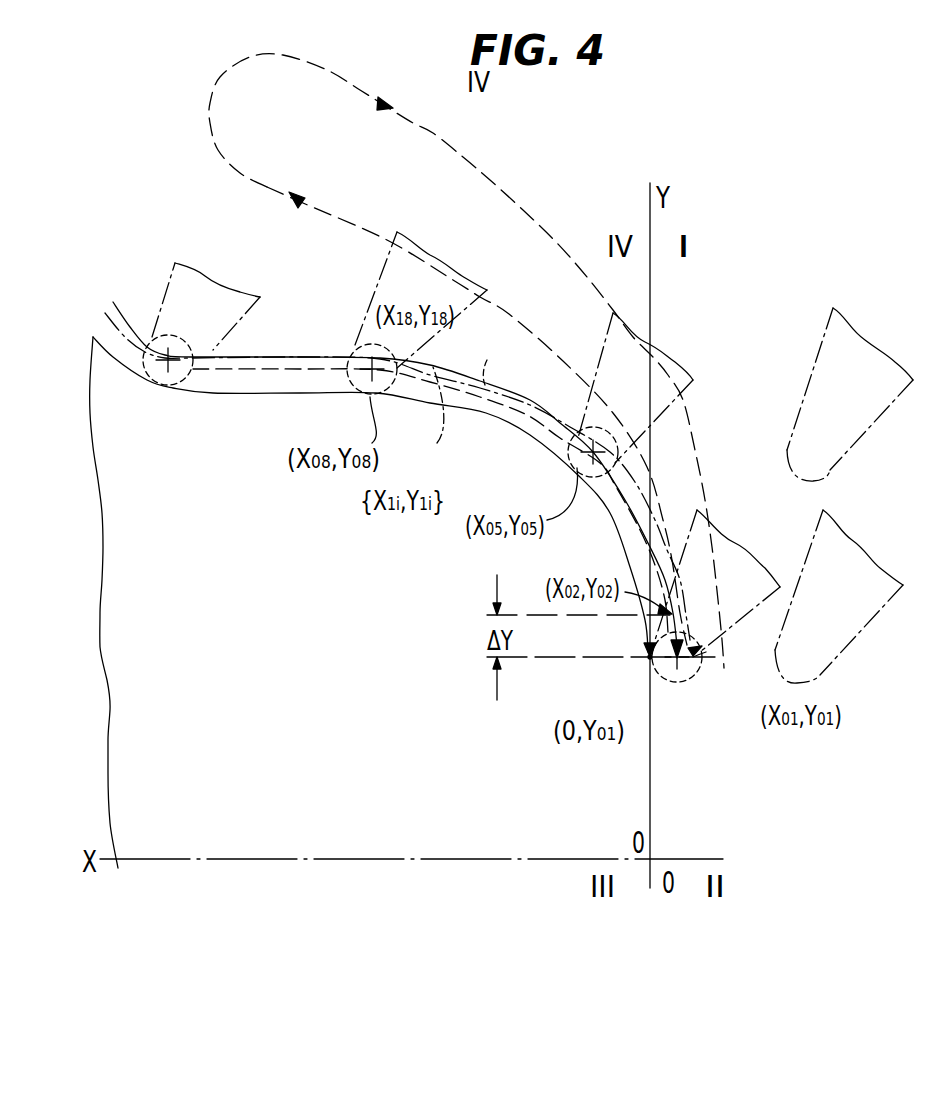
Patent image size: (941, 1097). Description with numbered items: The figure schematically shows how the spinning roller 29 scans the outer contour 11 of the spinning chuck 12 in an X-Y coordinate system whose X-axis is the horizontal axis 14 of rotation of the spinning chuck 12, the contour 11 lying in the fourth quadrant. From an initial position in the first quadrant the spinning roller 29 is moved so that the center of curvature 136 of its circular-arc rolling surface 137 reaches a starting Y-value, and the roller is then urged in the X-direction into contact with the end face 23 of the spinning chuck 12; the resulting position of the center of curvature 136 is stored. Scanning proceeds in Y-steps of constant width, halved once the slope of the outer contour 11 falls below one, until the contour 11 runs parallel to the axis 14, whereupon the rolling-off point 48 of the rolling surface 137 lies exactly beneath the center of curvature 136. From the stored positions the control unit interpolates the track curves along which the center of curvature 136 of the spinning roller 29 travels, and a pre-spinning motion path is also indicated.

The outer contour 11 is at (432, 140).
The spinning chuck 12 is at (285, 410).
The horizontal axis 14 is at (207, 858).
The end face 23 is at (650, 808).
The spinning roller 29 is at (867, 400).
The rolling-off point 48 is at (650, 657).
The center of curvature 136 is at (678, 662).
The rolling surface 137 is at (663, 683).